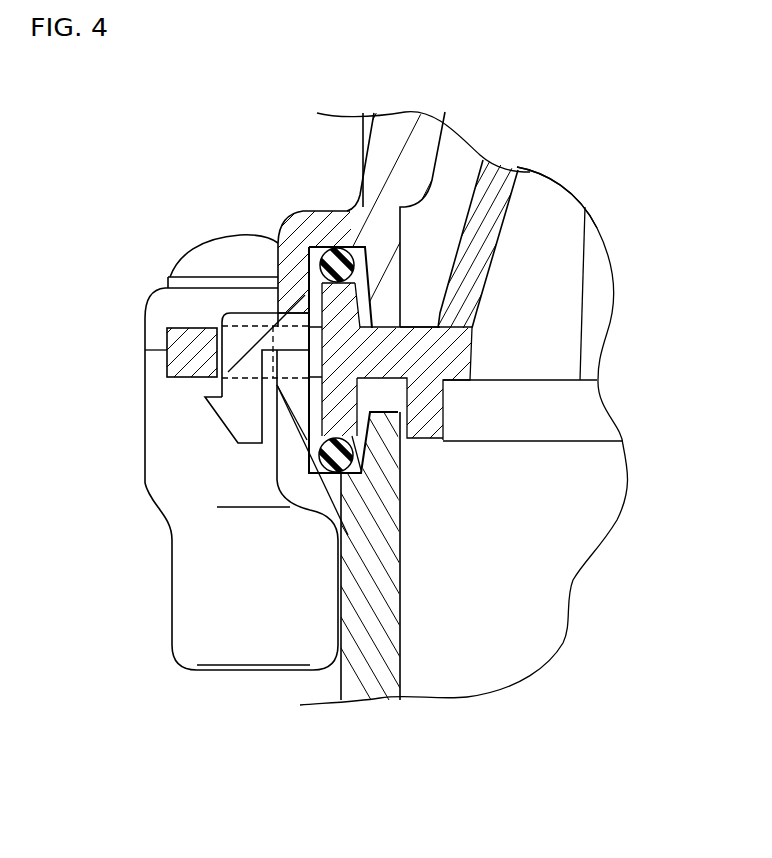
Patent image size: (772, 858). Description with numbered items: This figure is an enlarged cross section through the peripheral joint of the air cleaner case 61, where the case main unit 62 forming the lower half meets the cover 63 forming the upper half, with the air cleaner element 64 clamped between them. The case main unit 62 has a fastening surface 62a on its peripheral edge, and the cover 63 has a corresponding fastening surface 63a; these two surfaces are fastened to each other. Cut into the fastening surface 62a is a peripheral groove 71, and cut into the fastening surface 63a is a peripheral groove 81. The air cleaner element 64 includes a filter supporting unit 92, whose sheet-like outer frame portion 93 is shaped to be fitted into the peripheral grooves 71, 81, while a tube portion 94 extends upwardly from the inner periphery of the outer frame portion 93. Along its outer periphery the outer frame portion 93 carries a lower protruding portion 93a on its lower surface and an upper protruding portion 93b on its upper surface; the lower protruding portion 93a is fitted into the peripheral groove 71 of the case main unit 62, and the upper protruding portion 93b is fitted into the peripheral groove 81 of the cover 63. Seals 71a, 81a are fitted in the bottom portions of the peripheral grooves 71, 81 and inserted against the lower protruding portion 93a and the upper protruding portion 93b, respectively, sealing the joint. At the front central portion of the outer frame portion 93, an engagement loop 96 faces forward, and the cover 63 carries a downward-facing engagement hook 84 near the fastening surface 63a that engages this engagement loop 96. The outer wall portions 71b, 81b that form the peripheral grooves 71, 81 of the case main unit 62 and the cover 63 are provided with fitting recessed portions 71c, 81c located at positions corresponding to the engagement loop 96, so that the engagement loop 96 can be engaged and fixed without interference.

The air cleaner case 61 is at (360, 127).
The case main unit 62 is at (380, 660).
The fastening surface 62a is at (273, 315).
The cover 63 is at (410, 130).
The fastening surface 63a is at (228, 372).
The air cleaner element 64 is at (470, 187).
The peripheral groove 71 is at (368, 462).
The seal 71a is at (277, 462).
The outer wall portion 71b is at (283, 415).
The fitting recessed portion 71c is at (388, 380).
The peripheral groove 81 is at (372, 267).
The seal 81a is at (337, 251).
The outer wall portion 81b is at (295, 273).
The fitting recessed portion 81c is at (265, 378).
The engagement hook 84 is at (222, 387).
The filter supporting unit 92 is at (510, 156).
The outer frame portion 93 is at (420, 347).
The lower protruding portion 93a is at (277, 428).
The upper protruding portion 93b is at (275, 272).
The tube portion 94 is at (500, 210).
The engagement loop 96 is at (190, 342).